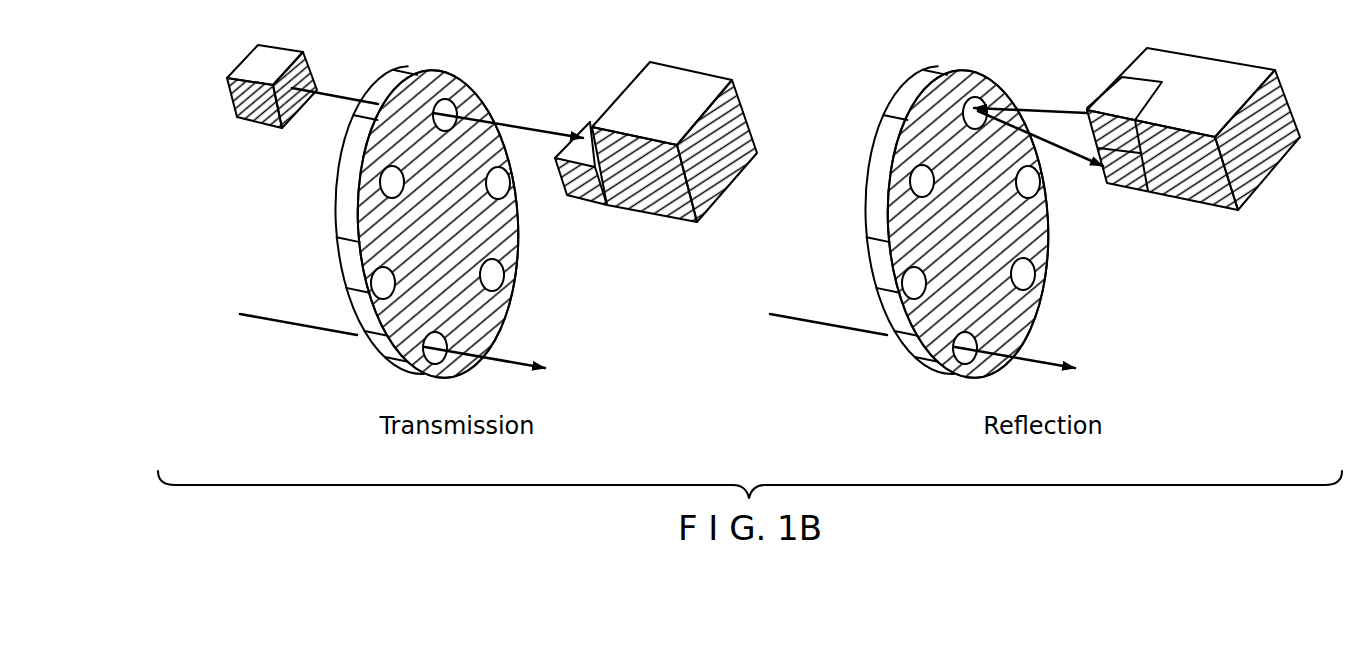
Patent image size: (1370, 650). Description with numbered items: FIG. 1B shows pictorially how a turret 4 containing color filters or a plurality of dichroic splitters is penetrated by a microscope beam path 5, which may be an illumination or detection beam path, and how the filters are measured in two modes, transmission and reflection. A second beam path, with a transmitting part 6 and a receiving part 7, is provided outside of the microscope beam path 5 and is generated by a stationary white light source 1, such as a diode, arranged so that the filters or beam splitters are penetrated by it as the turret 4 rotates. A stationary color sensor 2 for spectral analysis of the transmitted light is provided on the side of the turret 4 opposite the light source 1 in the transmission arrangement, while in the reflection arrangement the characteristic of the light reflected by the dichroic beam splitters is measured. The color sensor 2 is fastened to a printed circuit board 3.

The white light source 1 is at (225, 92).
The color sensor 2 is at (580, 150).
The printed circuit board 3 is at (663, 103).
The turret 4 is at (373, 357).
The microscope beam path 5 is at (510, 352).
The transmitting part of second beam path 6 is at (333, 94).
The receiving part of second beam path 7 is at (527, 120).